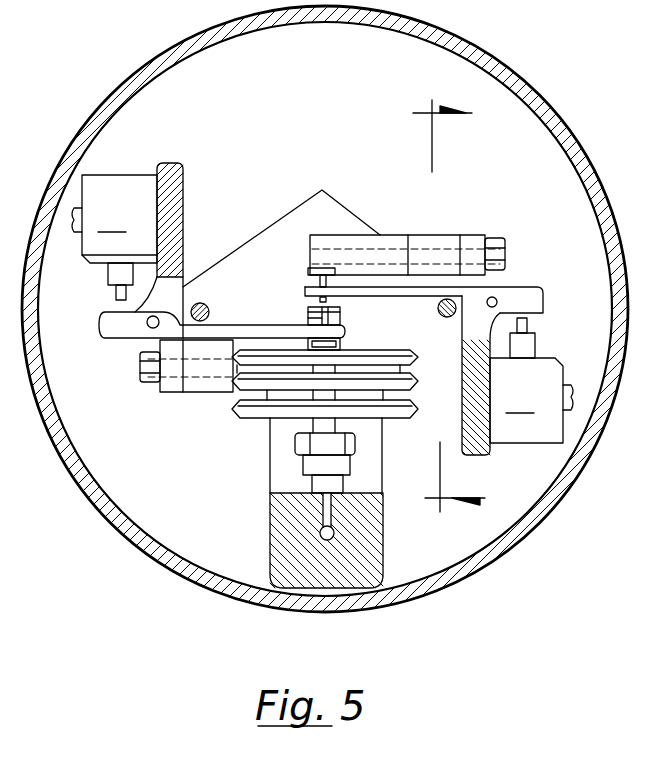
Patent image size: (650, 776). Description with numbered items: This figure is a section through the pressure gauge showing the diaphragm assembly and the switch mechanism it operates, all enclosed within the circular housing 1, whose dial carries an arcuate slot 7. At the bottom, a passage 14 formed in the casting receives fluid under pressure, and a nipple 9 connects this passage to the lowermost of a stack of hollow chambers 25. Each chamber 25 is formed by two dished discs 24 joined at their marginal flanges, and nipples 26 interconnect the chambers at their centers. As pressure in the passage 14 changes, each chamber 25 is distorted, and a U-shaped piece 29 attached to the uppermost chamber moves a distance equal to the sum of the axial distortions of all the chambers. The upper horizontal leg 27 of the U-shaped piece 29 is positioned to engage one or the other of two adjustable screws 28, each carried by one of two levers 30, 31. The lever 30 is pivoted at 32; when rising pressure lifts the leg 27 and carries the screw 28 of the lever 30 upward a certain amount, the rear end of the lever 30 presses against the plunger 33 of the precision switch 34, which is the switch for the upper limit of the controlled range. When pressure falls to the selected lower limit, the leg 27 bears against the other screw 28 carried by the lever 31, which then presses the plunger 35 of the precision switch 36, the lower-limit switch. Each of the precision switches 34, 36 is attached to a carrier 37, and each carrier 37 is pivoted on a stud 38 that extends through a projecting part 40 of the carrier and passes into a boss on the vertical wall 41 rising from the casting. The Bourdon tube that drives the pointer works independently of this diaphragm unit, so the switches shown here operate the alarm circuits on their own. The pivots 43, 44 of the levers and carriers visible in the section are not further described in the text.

The housing 1 is at (521, 94).
The arcuate slot 7 is at (459, 306).
The nipple 9 is at (300, 445).
The passage 14 is at (330, 520).
The dished disc 24 is at (240, 410).
The hollow chamber 25 is at (412, 390).
The nipple 26 is at (335, 428).
The upper horizontal leg 27 is at (340, 313).
The adjustable screw 28 is at (310, 268).
The U-shaped piece 29 is at (308, 318).
The lever 30 is at (513, 290).
The lever 31 is at (108, 330).
The pivot 32 is at (497, 302).
The plunger 33 is at (532, 323).
The precision switch 34 is at (531, 400).
The plunger 35 is at (116, 292).
The precision switch 36 is at (114, 219).
The carrier 37 is at (183, 183).
The stud 38 is at (140, 366).
The projecting part 40 is at (205, 388).
The vertical wall 41 is at (268, 288).
The pivot pin 43 is at (445, 318).
The pivot pin 44 is at (200, 303).